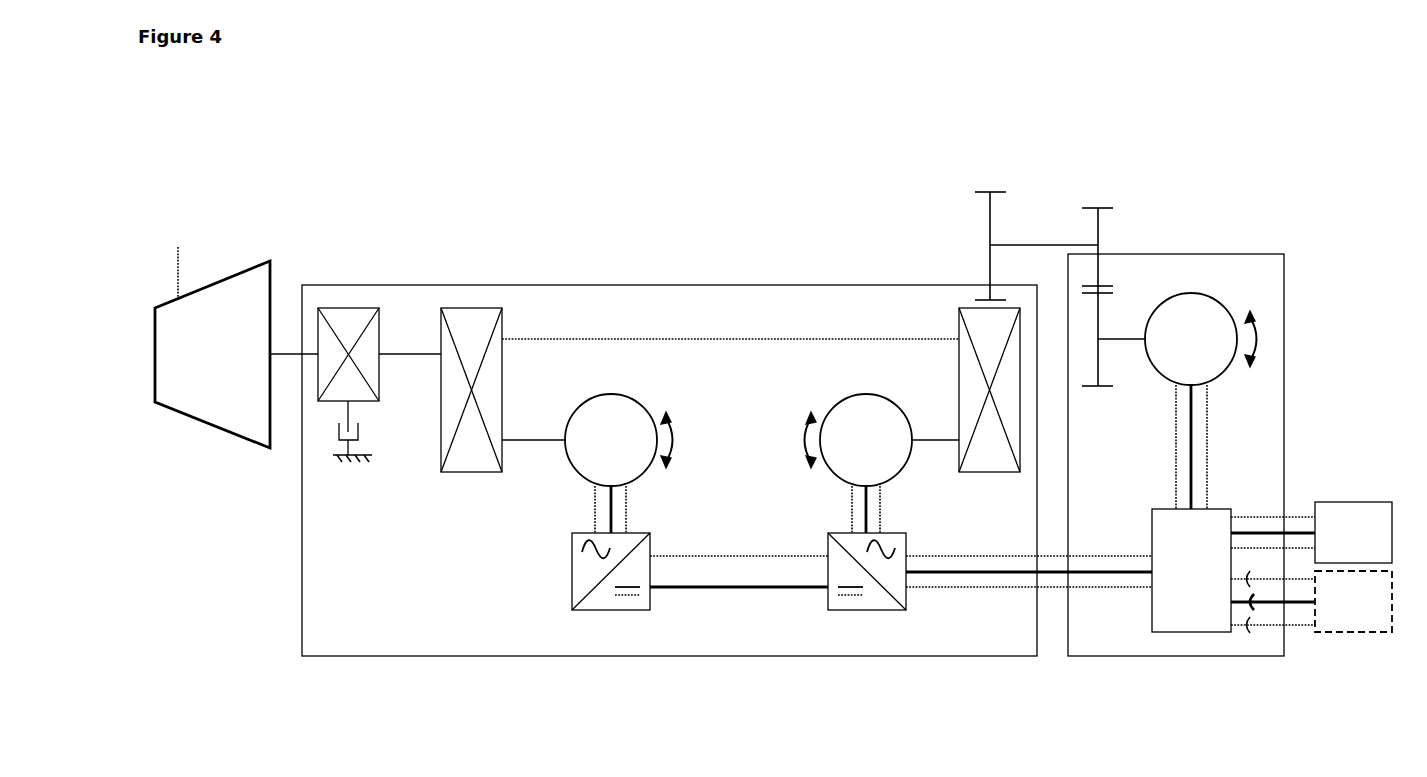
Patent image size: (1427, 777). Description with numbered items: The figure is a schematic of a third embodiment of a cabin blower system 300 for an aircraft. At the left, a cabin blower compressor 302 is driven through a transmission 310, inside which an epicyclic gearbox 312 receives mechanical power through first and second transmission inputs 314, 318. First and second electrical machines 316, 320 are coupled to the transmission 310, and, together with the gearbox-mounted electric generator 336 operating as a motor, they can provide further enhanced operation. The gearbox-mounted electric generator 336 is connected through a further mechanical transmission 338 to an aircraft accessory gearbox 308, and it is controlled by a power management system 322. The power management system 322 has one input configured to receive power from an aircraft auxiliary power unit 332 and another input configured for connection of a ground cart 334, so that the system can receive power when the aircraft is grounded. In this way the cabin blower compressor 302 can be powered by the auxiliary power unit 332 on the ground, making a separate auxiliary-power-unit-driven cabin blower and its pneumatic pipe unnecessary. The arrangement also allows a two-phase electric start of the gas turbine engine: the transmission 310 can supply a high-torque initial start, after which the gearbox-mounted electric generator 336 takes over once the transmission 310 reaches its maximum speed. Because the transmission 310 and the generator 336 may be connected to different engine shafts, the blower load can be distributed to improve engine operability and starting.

The cabin blower system 300 is at (383, 98).
The cabin blower compressor 302 is at (165, 303).
The aircraft accessory gearbox 308 is at (969, 308).
The transmission 310 is at (426, 254).
The epicyclic gearbox 312 is at (459, 462).
The first transmission input 314 is at (545, 339).
The first electrical machine 316 is at (866, 394).
The second transmission input 318 is at (522, 440).
The second electrical machine 320 is at (611, 394).
The power management system 322 is at (1217, 668).
The aircraft auxiliary power unit 332 is at (1353, 502).
The ground cart 334 is at (1363, 632).
The gearbox-mounted electric generator 336 is at (1213, 295).
The further mechanical transmission 338 is at (1126, 228).